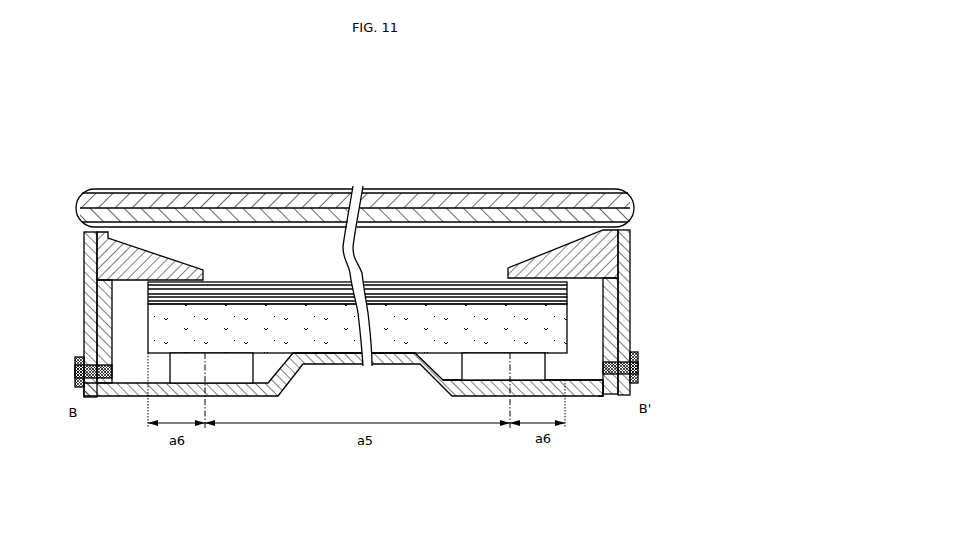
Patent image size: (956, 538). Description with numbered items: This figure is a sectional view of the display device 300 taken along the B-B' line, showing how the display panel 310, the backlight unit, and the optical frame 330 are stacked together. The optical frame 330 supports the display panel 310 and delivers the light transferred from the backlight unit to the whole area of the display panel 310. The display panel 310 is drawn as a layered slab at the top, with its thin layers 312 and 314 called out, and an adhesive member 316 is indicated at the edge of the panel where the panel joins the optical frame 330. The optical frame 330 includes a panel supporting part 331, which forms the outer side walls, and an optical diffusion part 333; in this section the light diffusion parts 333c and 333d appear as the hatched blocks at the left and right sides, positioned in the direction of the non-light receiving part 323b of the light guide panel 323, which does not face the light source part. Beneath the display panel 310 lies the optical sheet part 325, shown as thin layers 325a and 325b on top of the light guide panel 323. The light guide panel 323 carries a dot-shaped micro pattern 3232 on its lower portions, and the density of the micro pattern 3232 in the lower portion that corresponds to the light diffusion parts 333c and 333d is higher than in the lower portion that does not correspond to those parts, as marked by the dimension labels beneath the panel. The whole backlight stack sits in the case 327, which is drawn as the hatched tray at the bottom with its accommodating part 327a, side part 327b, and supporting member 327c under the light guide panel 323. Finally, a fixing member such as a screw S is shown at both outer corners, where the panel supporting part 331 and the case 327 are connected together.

The display device 300 is at (95, 116).
The display panel 310 is at (355, 164).
The second layer 312 is at (355, 215).
The fourth layer 314 is at (355, 200).
The window 316 is at (378, 168).
The light guide panel 323 is at (241, 334).
The non-light receiving part 323b is at (147, 312).
The micro pattern 3232 is at (473, 354).
The optical sheet part 325 is at (357, 198).
The first adhesive layer 325a is at (377, 280).
The second adhesive layer 325b is at (410, 287).
The case 327 is at (370, 433).
The bottom cover base 327a is at (573, 390).
The bottom cover side 327b is at (598, 381).
The bottom cover support 327c is at (364, 414).
The optical frame 330 is at (404, 271).
The panel supporting part 331 is at (631, 307).
The optical diffusion part 333 is at (387, 213).
The light diffusion part 333c is at (160, 257).
The light diffusion part 333d is at (566, 245).
The sealing member S is at (640, 364).